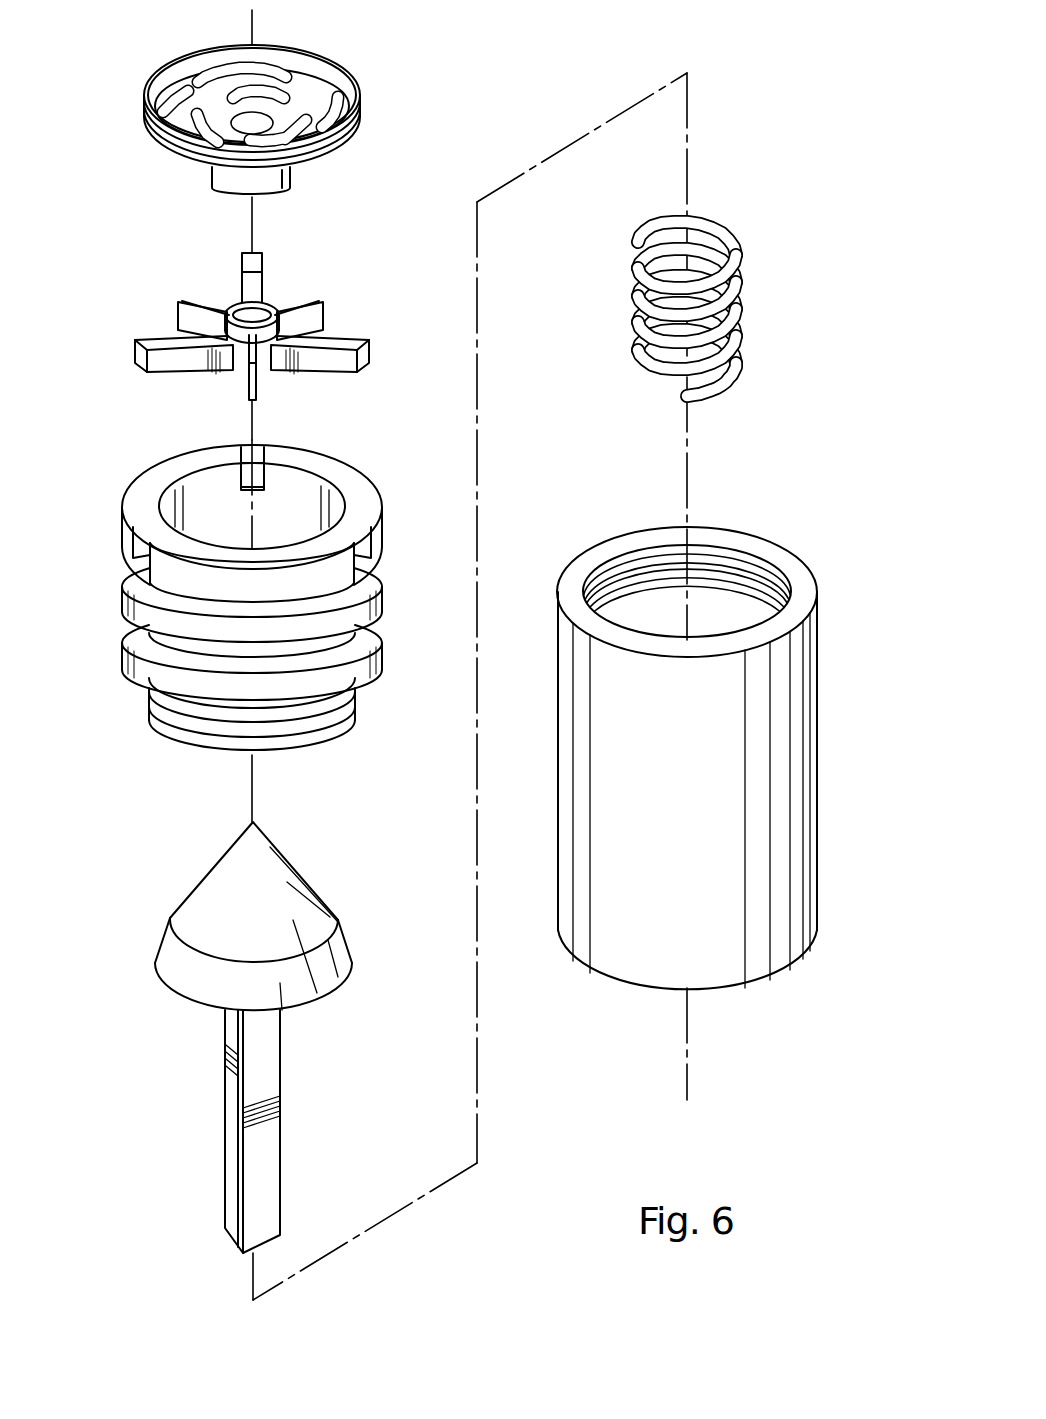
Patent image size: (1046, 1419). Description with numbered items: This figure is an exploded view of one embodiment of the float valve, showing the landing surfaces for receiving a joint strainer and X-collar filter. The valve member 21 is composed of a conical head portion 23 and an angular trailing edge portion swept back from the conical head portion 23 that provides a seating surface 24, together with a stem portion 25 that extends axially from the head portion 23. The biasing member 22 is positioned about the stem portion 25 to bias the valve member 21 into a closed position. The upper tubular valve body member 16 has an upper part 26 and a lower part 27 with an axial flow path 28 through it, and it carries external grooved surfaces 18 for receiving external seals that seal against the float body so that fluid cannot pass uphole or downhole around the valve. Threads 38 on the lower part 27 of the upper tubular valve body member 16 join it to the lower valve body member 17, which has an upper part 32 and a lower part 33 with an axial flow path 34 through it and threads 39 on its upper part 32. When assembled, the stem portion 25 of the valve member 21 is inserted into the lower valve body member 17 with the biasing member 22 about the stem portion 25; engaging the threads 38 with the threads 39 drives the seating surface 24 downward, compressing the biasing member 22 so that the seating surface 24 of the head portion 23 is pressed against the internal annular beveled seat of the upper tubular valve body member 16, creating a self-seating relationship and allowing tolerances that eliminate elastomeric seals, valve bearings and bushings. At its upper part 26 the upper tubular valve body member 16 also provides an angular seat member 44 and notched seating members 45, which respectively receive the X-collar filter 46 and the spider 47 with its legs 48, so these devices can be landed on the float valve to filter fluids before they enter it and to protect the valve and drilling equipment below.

The upper tubular valve body member 16 is at (249, 585).
The lower valve body member 17 is at (723, 740).
The external grooved surfaces 18 is at (160, 597).
The valve member 21 is at (226, 1037).
The biasing member 22 is at (632, 300).
The conical head portion 23 is at (207, 903).
The seating surface 24 is at (177, 965).
The stem portion 25 is at (280, 1108).
The upper part 26 is at (125, 525).
The lower part 27 is at (135, 688).
The axial flow path 28 is at (280, 505).
The upper part 32 is at (817, 627).
The lower part 33 is at (817, 895).
The axial flow path 34 is at (743, 615).
The threads 38 is at (162, 733).
The threads 39 is at (732, 568).
The angular seat member 44 is at (330, 482).
The notched seating members 45 is at (368, 558).
The X-collar filter 46 is at (358, 112).
The spider 47 is at (327, 316).
The legs 48 is at (368, 357).